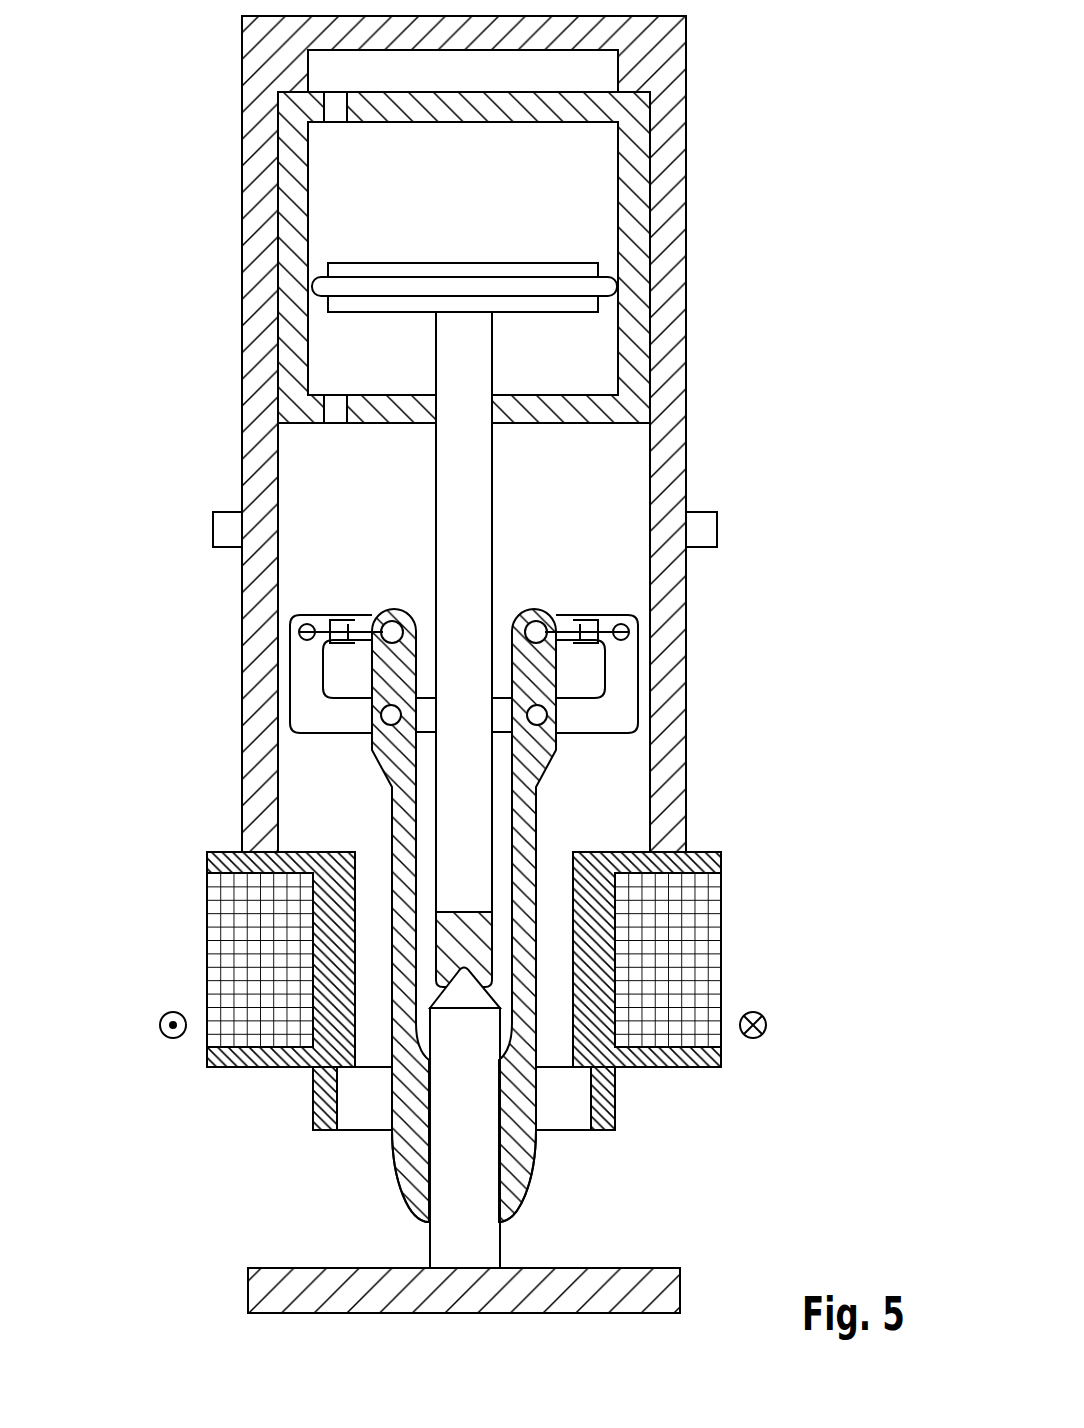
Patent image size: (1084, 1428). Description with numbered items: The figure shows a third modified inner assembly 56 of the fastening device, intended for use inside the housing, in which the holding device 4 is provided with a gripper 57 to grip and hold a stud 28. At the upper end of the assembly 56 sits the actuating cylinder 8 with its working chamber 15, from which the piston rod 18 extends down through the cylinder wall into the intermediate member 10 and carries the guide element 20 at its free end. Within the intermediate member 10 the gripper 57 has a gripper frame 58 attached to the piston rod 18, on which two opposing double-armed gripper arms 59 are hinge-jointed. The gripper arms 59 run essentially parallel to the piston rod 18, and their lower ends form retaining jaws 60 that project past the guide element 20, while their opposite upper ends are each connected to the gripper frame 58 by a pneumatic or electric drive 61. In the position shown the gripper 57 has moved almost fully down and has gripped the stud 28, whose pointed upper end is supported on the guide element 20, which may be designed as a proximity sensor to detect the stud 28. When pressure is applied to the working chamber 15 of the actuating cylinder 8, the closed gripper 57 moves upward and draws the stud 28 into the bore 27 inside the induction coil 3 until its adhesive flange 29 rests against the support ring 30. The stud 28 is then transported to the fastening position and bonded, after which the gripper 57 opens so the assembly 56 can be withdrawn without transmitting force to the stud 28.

The assembly 56 is at (712, 61).
The actuating cylinder 8 is at (640, 206).
The working chamber 15 is at (597, 352).
The intermediate member 10 is at (257, 370).
The piston rod 18 is at (481, 540).
The pneumatic or electric drive 61 is at (342, 620).
The holding device 4 is at (284, 696).
The gripper frame 58 is at (620, 713).
The gripper 57 is at (372, 811).
The guide element 20 is at (478, 912).
The gripper arms 59 is at (403, 917).
The induction coil 3 is at (222, 963).
The bore 27 is at (553, 977).
The support ring 30 is at (318, 1105).
The retaining jaws 60 is at (410, 1180).
The stud 28 is at (485, 1243).
The adhesive flange 29 is at (262, 1288).